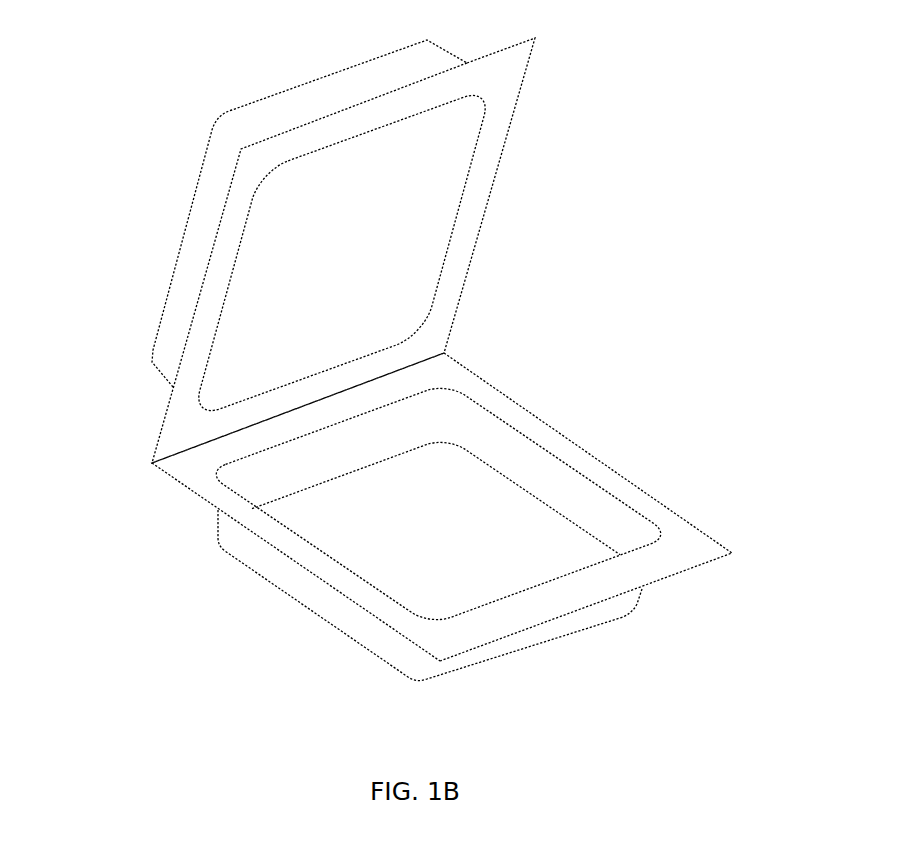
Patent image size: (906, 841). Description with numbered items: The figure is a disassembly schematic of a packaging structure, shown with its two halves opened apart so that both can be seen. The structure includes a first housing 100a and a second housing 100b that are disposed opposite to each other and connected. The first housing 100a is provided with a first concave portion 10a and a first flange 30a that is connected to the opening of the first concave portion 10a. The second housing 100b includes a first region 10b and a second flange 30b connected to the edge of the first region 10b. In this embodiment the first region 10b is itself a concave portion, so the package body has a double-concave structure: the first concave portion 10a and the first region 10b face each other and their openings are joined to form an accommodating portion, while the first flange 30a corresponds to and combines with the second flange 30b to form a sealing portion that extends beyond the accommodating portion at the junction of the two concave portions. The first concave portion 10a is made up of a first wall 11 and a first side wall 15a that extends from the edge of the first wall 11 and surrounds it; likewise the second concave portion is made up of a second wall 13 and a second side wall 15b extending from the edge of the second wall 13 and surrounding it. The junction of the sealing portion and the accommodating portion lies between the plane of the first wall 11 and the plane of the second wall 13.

The first housing 100a is at (340, 233).
The second housing 100b is at (449, 545).
The first wall 11 is at (203, 152).
The second wall 13 is at (393, 667).
The first concave portion 10a is at (441, 198).
The first region 10b is at (543, 477).
The first side wall 15a is at (326, 92).
The second side wall 15b is at (533, 641).
The first flange 30a is at (502, 87).
The second flange 30b is at (663, 522).